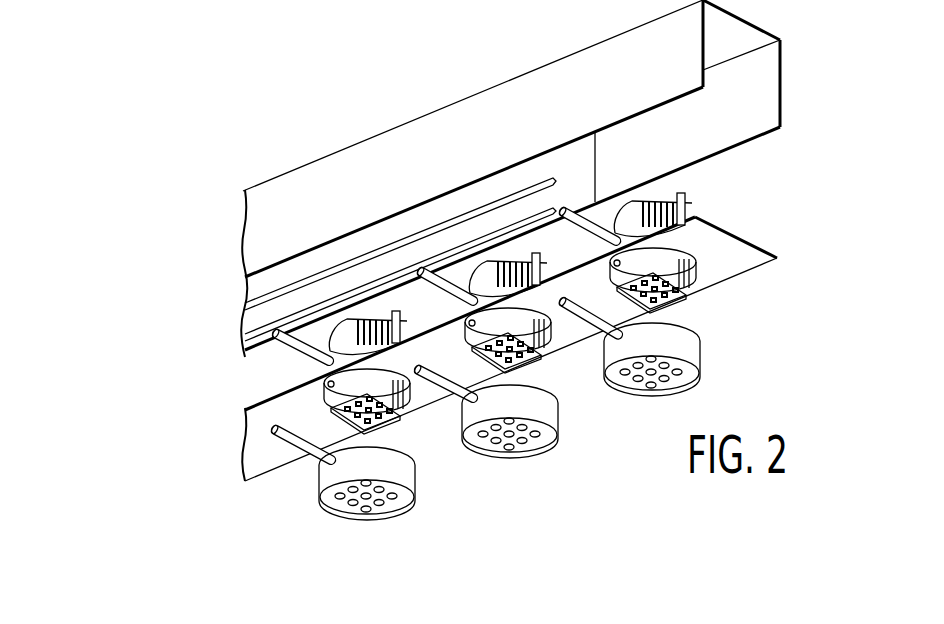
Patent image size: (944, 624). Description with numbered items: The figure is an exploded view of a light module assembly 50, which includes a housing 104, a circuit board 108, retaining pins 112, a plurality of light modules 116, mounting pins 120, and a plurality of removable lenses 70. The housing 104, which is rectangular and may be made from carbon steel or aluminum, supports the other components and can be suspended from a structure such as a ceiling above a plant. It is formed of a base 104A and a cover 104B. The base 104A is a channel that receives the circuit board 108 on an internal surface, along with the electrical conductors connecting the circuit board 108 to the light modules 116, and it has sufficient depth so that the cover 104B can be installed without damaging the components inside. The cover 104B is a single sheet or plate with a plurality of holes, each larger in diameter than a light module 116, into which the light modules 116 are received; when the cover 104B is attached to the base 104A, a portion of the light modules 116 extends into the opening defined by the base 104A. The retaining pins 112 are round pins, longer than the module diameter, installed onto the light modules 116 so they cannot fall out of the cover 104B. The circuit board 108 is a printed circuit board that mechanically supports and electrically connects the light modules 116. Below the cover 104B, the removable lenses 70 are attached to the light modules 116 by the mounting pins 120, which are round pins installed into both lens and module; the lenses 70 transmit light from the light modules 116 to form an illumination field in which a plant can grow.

The light module assembly 50 is at (197, 118).
The housing 104 is at (423, 114).
The base 104A is at (266, 218).
The cover 104B is at (262, 419).
The circuit board 108 is at (268, 283).
The retaining pins 112 is at (282, 352).
The light modules 116 is at (659, 199).
The mounting pins 120 is at (268, 471).
The removable lens 70 is at (323, 508).